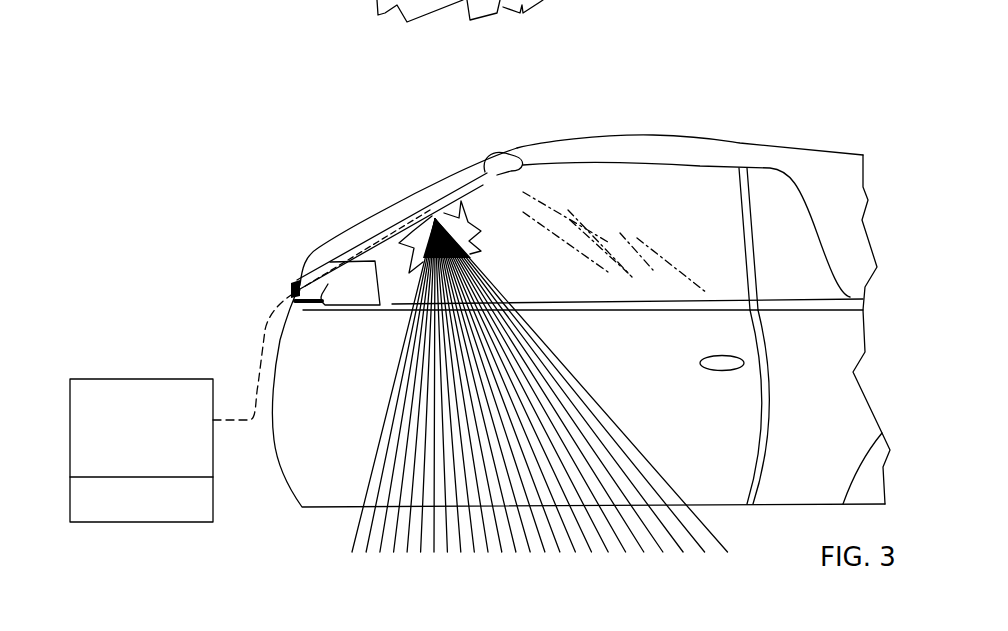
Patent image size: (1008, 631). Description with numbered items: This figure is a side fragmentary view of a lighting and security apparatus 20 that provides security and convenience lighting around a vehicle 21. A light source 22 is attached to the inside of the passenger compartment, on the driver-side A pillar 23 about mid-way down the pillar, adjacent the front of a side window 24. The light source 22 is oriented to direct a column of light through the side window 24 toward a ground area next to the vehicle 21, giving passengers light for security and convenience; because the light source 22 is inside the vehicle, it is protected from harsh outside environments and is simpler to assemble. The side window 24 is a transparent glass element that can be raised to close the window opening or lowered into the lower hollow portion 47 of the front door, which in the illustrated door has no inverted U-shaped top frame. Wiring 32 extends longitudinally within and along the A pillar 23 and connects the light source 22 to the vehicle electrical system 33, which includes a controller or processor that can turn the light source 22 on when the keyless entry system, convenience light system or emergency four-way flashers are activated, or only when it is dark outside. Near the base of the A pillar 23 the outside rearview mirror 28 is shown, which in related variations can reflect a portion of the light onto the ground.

The lighting and security apparatus 20 is at (430, 176).
The vehicle 21 is at (621, 92).
The light source 22 is at (447, 217).
The A pillar 23 is at (413, 222).
The side window 24 is at (700, 218).
The pillar base connector 28 is at (300, 285).
The wiring 32 is at (238, 423).
The vehicle electrical system 33 is at (158, 379).
The lower hollow portion 47 is at (653, 378).